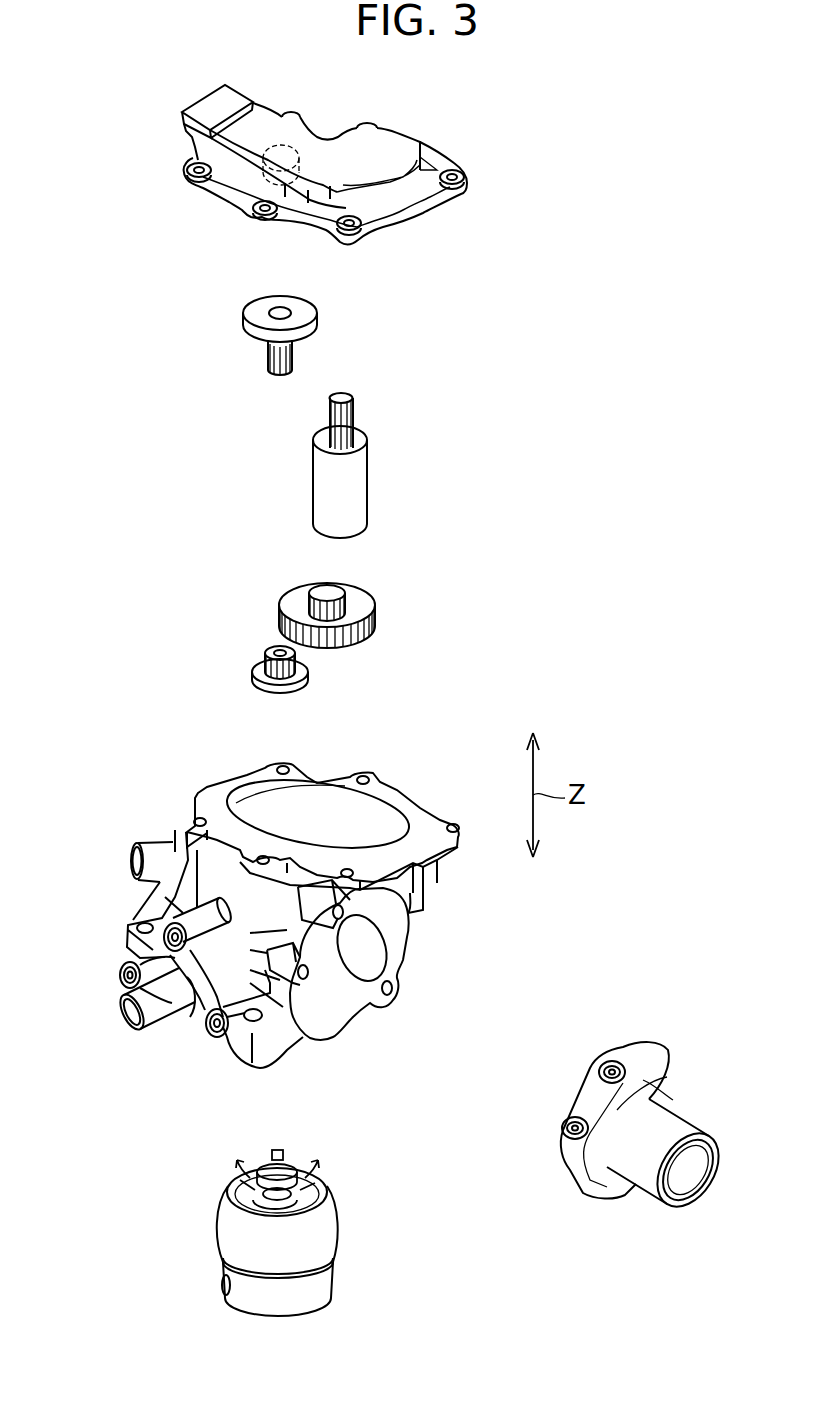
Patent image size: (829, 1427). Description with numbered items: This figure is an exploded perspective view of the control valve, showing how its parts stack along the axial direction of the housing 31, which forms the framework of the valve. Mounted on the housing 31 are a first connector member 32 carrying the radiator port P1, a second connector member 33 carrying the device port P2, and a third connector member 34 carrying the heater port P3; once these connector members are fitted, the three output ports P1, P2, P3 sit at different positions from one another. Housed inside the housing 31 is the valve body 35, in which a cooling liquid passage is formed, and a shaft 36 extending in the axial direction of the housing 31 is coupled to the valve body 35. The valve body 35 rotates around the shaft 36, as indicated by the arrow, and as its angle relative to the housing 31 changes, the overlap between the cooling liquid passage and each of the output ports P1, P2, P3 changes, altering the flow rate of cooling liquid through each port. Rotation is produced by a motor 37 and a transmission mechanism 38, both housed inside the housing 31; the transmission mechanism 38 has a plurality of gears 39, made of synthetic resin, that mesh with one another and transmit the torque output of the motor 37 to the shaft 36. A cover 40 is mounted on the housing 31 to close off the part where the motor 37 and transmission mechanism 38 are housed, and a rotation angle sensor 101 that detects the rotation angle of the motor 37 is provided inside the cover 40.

The housing 31 is at (420, 887).
The first connector member 32 is at (660, 1075).
The second connector member 33 is at (178, 1030).
The third connector member 34 is at (150, 878).
The valve body 35 is at (333, 1220).
The shaft 36 is at (287, 1157).
The motor 37 is at (367, 488).
The transmission mechanism 38 is at (440, 571).
The gears 39 is at (320, 321).
The cover 40 is at (447, 158).
The rotation angle sensor 101 is at (298, 152).
The radiator port P1 is at (685, 1170).
The device port P2 is at (125, 1015).
The heater port P3 is at (135, 842).